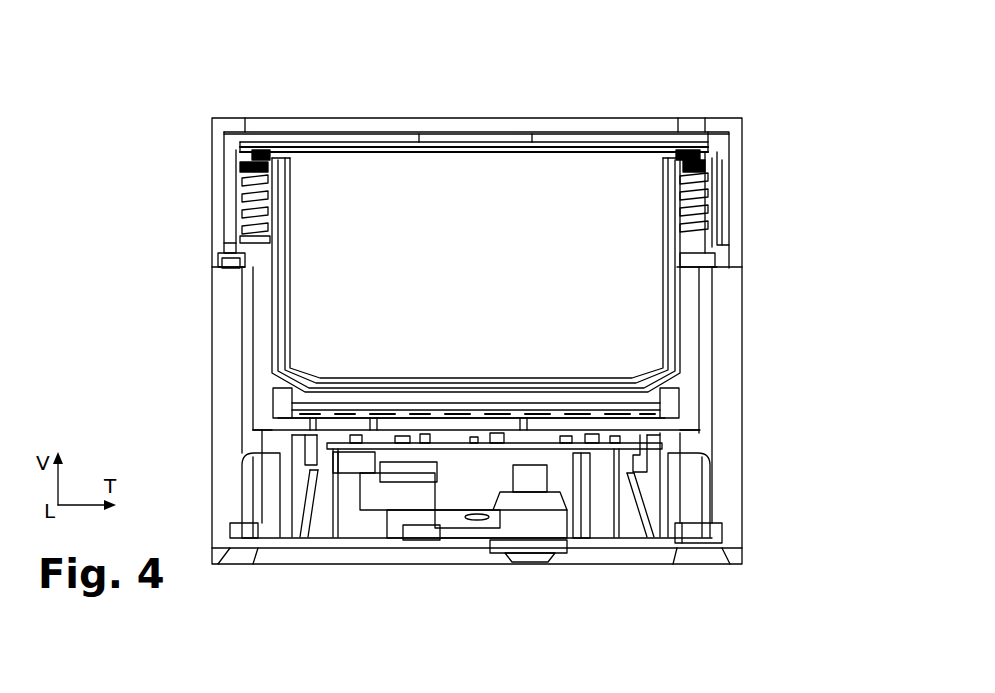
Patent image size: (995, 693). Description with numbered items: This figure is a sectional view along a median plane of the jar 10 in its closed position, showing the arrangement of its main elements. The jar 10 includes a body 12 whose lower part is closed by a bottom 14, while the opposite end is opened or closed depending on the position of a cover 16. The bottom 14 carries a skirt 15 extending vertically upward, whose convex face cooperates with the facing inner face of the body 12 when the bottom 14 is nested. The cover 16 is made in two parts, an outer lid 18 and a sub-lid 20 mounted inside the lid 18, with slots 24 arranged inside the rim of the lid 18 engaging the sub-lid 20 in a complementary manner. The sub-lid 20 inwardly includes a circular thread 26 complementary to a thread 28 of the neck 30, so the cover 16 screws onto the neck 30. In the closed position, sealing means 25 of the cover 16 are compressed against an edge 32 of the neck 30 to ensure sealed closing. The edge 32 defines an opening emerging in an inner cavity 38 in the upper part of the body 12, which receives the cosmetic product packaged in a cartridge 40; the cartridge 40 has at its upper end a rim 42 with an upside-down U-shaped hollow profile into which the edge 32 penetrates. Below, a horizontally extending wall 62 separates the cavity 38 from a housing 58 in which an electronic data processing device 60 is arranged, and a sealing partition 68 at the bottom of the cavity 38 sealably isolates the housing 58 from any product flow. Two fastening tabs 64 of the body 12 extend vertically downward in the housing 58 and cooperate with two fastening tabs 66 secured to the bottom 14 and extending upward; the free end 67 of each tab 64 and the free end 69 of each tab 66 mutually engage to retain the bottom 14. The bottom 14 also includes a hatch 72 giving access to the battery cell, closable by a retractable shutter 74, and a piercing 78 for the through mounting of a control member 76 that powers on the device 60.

The jar 10 is at (782, 84).
The body 12 is at (731, 345).
The bottom 14 is at (295, 558).
The skirt 15 is at (703, 495).
The cover 16 is at (639, 114).
The outer lid 18 is at (733, 190).
The sub-lid 20 is at (724, 208).
The slots 24 is at (218, 254).
The sealing means 25 is at (448, 148).
The circular thread 26 is at (238, 168).
The thread 28 is at (240, 187).
The neck 30 is at (697, 238).
The edge 32 is at (712, 160).
The inner cavity 38 is at (394, 183).
The cartridge 40 is at (282, 292).
The rim 42 is at (681, 157).
The housing 58 is at (348, 495).
The electronic data processing device 60 is at (306, 488).
The wall 62 is at (302, 427).
The fastening tabs 64 is at (652, 450).
The fastening tabs 66 is at (702, 541).
The free end 67 is at (653, 507).
The sealing partition 68 is at (284, 403).
The free end 69 is at (632, 467).
The hatch 72 is at (437, 548).
The retractable shutter 74 is at (404, 532).
The control member 76 is at (528, 560).
The piercing 78 is at (590, 548).